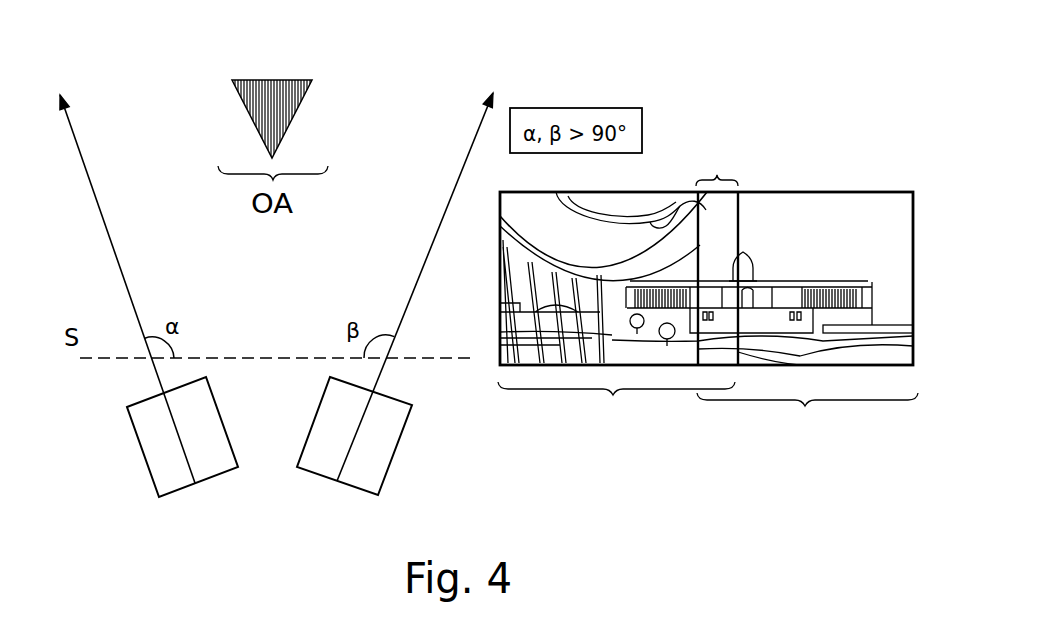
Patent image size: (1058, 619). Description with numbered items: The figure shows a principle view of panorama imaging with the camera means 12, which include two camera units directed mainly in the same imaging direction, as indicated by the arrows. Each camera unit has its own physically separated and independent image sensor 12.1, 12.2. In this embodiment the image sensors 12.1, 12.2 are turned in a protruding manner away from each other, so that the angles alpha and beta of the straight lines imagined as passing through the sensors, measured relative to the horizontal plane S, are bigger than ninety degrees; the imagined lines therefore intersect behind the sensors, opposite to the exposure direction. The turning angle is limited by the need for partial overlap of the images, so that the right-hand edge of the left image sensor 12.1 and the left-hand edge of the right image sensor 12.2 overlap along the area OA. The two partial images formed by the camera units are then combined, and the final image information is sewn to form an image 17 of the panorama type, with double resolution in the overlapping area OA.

The camera means 12 is at (157, 508).
The image sensor 12.1 is at (137, 398).
The image sensor 12.2 is at (395, 388).
The image of the panorama type 17 is at (803, 130).